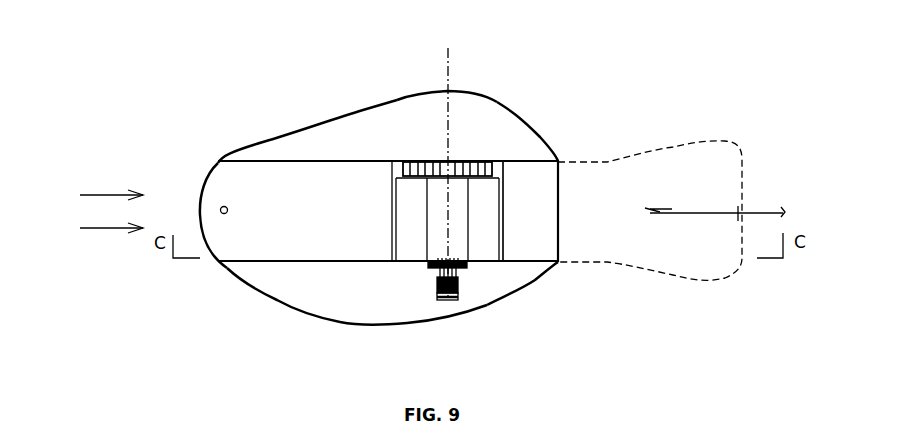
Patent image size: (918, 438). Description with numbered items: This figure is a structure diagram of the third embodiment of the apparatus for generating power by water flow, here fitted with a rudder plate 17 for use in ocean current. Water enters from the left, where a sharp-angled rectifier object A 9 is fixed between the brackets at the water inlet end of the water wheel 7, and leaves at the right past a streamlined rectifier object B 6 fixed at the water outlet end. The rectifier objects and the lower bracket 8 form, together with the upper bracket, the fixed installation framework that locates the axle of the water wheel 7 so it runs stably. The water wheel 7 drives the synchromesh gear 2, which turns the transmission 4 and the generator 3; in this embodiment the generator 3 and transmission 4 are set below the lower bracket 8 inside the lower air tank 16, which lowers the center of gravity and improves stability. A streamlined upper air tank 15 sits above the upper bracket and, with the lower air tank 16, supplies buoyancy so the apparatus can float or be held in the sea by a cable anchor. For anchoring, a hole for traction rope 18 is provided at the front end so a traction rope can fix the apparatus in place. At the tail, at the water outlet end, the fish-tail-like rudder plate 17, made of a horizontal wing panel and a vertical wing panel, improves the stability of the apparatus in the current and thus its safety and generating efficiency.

The synchromesh gear 2 is at (482, 160).
The generator 3 is at (458, 288).
The transmission 4 is at (457, 265).
The rectifier object B 6 is at (532, 182).
The water wheel 7 is at (412, 217).
The lower bracket 8 is at (407, 262).
The rectifier object A 9 is at (320, 195).
The upper air tank 15 is at (430, 91).
The lower air tank 16 is at (453, 320).
The rudder plate 17 is at (663, 175).
The hole for traction rope 18 is at (221, 207).